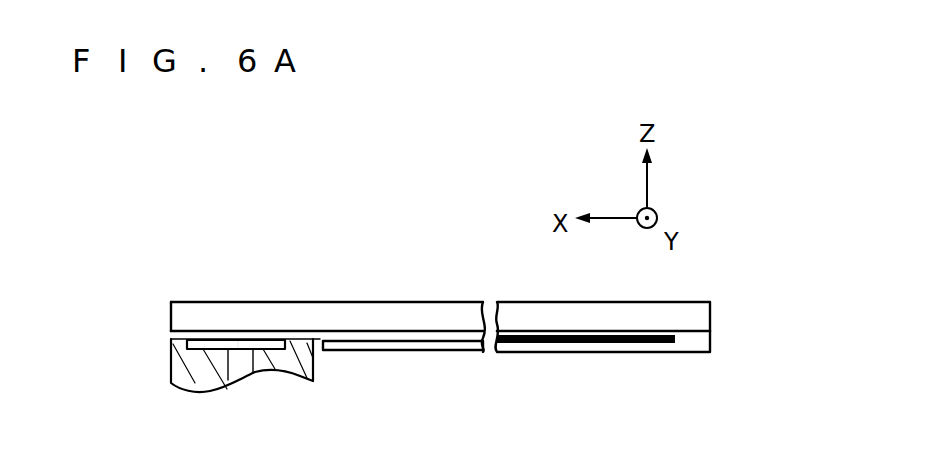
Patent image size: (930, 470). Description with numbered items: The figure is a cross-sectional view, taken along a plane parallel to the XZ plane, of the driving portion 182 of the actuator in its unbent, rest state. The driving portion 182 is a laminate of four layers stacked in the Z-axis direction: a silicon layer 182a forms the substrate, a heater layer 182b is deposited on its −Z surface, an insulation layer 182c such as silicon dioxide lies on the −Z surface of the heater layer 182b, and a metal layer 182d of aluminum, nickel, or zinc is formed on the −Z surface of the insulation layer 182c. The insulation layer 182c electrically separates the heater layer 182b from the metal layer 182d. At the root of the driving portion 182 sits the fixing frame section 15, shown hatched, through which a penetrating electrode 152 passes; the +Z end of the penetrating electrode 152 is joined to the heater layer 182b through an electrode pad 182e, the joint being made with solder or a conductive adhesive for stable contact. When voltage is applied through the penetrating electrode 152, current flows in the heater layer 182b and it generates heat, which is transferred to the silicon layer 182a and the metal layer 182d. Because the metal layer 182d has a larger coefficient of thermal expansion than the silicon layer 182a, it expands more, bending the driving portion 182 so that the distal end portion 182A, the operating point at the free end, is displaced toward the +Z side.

The fixing frame section 15 is at (217, 396).
The penetrating electrode 152 is at (237, 370).
The driving portion 182 is at (396, 304).
The distal end portion 182A is at (437, 304).
The silicon layer 182a is at (366, 310).
The heater layer 182b is at (176, 337).
The insulation layer 182c is at (594, 344).
The metal layer 182d is at (693, 344).
The electrode pad 182e is at (238, 345).